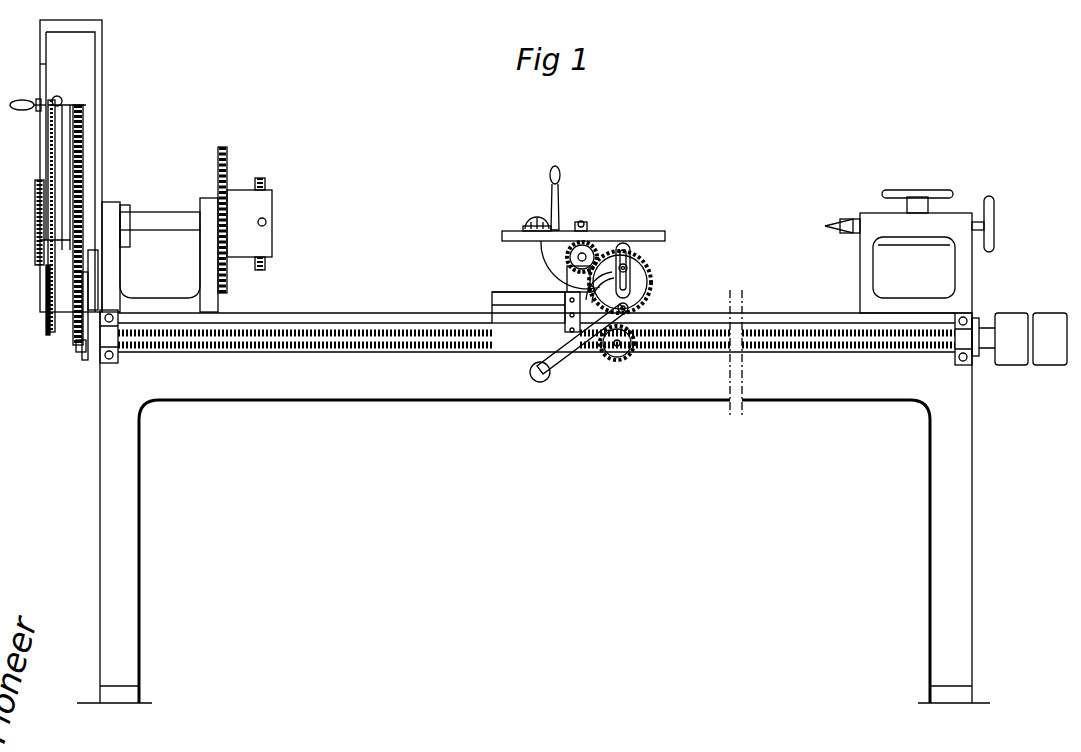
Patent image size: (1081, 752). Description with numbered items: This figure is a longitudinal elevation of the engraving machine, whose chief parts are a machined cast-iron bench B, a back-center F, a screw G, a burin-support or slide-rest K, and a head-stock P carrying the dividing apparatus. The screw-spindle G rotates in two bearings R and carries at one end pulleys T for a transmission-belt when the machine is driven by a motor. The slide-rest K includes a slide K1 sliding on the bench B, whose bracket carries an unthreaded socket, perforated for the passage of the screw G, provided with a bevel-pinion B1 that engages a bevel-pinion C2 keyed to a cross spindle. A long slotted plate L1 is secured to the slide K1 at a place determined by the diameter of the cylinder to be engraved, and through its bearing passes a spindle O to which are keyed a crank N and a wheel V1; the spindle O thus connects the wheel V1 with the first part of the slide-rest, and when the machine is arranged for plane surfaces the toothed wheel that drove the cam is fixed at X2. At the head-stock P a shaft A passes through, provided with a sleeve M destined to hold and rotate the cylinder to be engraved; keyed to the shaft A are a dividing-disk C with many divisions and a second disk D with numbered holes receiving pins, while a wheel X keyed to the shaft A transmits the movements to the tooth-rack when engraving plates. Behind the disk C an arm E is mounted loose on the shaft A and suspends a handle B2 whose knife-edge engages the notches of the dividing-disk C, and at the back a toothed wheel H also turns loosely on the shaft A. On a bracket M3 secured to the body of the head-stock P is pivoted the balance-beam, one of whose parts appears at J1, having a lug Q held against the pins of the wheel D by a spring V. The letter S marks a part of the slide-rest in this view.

The bracket M3 is at (97, 156).
The frame upright J1 is at (40, 66).
The handle B2 is at (22, 93).
The toothed wheel H is at (71, 220).
The arm E is at (58, 157).
The second disk D is at (45, 262).
The dividing-disk C is at (47, 333).
The wheel V1 is at (82, 296).
The spring V is at (79, 352).
The bearings R is at (536, 346).
The shaft A is at (139, 257).
The head-stock P is at (169, 255).
The wheel X is at (222, 147).
The sleeve M is at (249, 224).
The bench B is at (533, 496).
The screw G is at (158, 345).
The carriage table S is at (588, 237).
The toothed wheel position X2 is at (558, 256).
The bevel-pinion B1 is at (603, 350).
The bevel-pinion C2 is at (624, 351).
The crank N is at (579, 344).
The slide K1 is at (492, 302).
The plate L1 is at (492, 292).
The spindle O is at (551, 184).
The lug Q is at (528, 218).
The slide-rest K is at (590, 217).
The back-center F is at (910, 273).
The pulleys T is at (1031, 339).